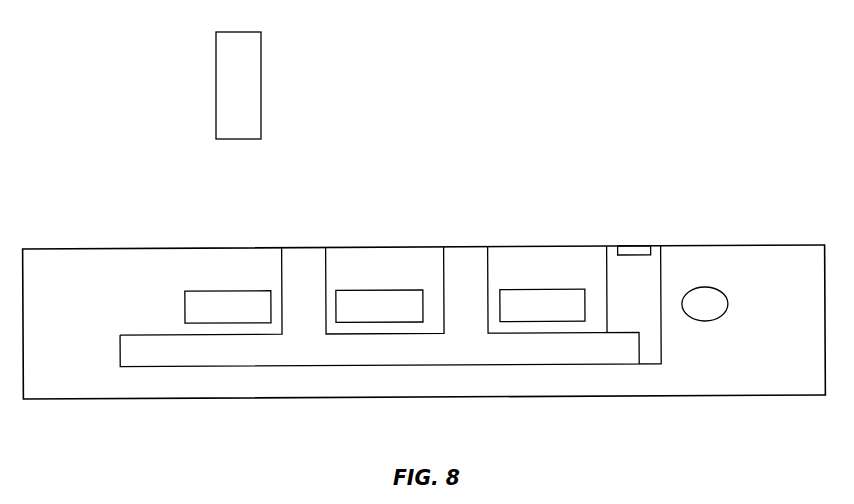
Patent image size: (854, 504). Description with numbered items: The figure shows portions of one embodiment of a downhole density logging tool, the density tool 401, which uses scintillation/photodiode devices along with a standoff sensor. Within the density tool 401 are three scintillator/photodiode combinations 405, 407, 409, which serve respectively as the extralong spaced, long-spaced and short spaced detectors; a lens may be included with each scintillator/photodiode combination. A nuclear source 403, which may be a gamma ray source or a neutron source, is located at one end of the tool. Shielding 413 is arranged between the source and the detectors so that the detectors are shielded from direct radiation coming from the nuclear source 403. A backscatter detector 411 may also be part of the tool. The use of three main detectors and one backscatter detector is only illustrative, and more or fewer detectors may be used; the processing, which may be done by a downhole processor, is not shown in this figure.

The density tool 401 is at (129, 215).
The nuclear source 403 is at (706, 289).
The scintillator/photodiode combination (extralong spaced detector) 405 is at (210, 290).
The scintillator/photodiode combination (long-spaced detector) 407 is at (402, 290).
The scintillator/photodiode combination (short spaced detector) 409 is at (563, 290).
The backscatter detector 411 is at (634, 247).
The shielding 413 is at (556, 350).